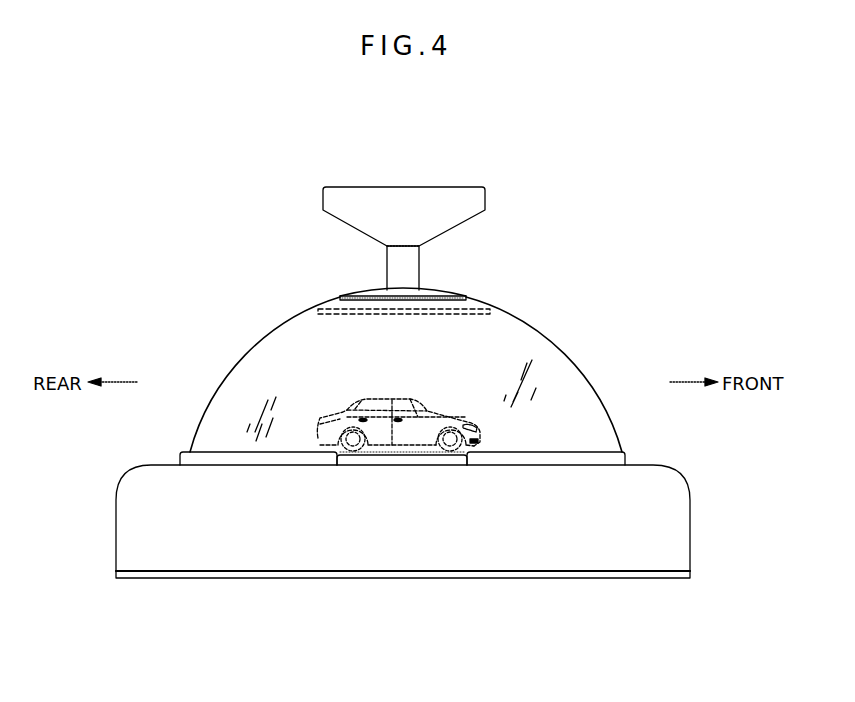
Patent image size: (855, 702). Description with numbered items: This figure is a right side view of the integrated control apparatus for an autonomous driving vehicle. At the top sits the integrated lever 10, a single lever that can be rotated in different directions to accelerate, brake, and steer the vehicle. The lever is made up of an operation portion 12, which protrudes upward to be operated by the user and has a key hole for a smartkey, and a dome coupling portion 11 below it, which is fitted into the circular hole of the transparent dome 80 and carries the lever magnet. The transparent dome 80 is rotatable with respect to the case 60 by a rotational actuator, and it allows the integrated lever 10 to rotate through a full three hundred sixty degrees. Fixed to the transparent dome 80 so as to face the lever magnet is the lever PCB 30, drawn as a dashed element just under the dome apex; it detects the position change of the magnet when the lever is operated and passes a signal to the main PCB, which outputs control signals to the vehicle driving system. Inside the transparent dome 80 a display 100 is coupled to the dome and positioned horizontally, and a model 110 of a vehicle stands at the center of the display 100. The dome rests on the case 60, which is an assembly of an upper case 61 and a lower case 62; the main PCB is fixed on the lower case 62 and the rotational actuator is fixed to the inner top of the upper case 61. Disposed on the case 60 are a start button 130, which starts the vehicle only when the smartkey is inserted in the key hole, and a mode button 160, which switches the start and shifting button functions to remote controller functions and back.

The integrated lever 10 is at (450, 179).
The dome coupling portion 11 is at (433, 291).
The operation portion 12 is at (400, 197).
The lever PCB 30 is at (444, 314).
The case 60 is at (210, 580).
The upper case 61 is at (558, 540).
The lower case 62 is at (322, 579).
The transparent dome 80 is at (577, 365).
The display 100 is at (400, 455).
The model 110 is at (348, 408).
The start button 130 is at (198, 458).
The mode button 160 is at (625, 453).